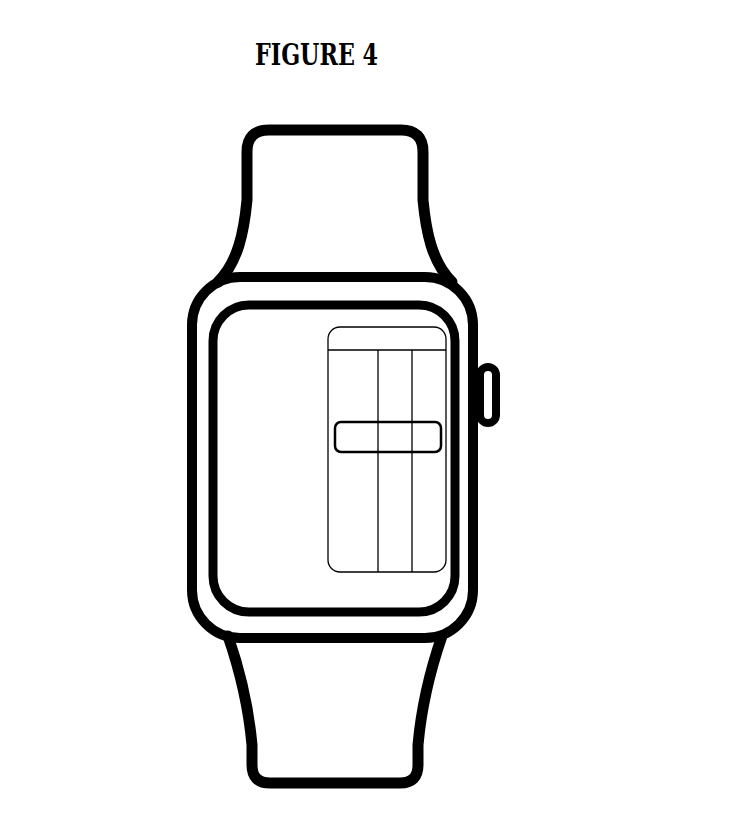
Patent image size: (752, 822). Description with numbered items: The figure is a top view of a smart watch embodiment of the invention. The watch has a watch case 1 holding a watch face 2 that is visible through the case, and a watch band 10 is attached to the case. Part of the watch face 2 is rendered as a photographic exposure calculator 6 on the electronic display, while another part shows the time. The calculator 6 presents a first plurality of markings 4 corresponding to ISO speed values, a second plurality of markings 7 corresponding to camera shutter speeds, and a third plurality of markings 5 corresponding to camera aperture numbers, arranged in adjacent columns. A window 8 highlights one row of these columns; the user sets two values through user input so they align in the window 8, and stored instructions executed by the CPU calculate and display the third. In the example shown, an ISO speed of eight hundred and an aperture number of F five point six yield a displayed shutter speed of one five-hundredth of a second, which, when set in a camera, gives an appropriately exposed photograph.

The watch case 1 is at (468, 285).
The watch face 2 is at (234, 451).
The first plurality of markings 4 is at (365, 419).
The third plurality of markings 5 is at (446, 433).
The photographic exposure calculator 6 is at (319, 328).
The second plurality of markings 7 is at (403, 445).
The window 8 is at (455, 446).
The watch band 10 is at (432, 203).